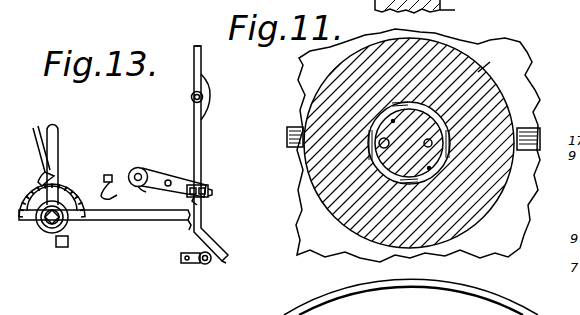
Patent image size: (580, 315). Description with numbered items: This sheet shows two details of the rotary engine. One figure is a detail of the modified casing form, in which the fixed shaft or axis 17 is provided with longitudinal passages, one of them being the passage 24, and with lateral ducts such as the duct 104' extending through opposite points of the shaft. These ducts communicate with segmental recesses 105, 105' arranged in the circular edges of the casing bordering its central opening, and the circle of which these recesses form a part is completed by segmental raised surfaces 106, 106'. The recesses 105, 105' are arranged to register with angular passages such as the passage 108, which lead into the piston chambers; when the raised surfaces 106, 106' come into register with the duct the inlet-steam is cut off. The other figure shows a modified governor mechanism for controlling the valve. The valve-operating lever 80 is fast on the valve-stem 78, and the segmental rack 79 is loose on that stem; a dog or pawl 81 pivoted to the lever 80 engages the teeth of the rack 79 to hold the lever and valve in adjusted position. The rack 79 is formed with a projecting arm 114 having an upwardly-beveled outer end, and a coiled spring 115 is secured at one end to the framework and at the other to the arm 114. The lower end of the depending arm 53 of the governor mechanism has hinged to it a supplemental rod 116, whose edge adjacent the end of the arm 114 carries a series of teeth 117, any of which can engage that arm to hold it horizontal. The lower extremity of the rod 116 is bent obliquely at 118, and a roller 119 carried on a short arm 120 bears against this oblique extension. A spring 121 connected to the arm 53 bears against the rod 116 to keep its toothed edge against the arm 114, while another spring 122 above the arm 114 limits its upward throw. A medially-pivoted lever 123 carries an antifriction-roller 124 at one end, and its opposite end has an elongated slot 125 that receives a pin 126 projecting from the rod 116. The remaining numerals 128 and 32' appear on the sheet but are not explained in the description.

In FIG. 13, the depending arm 53 is at (202, 55).
In FIG. 13, the valve-stem 78 is at (49, 234).
In FIG. 13, the segmental rack 79 is at (68, 186).
In FIG. 13, the valve-operating lever 80 is at (58, 138).
In FIG. 13, the dog or pawl 81 is at (34, 127).
In FIG. 13, the projecting arm 114 is at (152, 221).
In FIG. 13, the coiled spring 115 is at (42, 226).
In FIG. 13, the supplemental rod 116 is at (202, 153).
In FIG. 13, the teeth 117 is at (190, 226).
In FIG. 13, the oblique extension 118 is at (227, 260).
In FIG. 13, the roller 119 is at (207, 264).
In FIG. 13, the short arm 120 is at (192, 263).
In FIG. 13, the spring 121 is at (209, 91).
In FIG. 13, the spring 122 is at (114, 178).
In FIG. 13, the medially-pivoted lever 123 is at (152, 176).
In FIG. 13, the antifriction-roller 124 is at (146, 189).
In FIG. 13, the elongated slot 125 is at (208, 187).
In FIG. 13, the pin 126 is at (206, 198).
In FIG. 13, the projection 128 is at (212, 192).
In FIG. 11, the fixed shaft 17 is at (478, 74).
In FIG. 11, the longitudinal passage 24 is at (386, 146).
In FIG. 11, the segmental recess 105 is at (403, 147).
In FIG. 11, the segmental recess 105' is at (431, 117).
In FIG. 11, the segmental raised surface 106 is at (347, 143).
In FIG. 11, the segmental raised surface 106' is at (511, 171).
In FIG. 11, the angular passage 108 is at (377, 2).
In FIG. 11, the lateral duct 104' is at (469, 8).
In FIG. 11, the member 32' is at (563, 9).